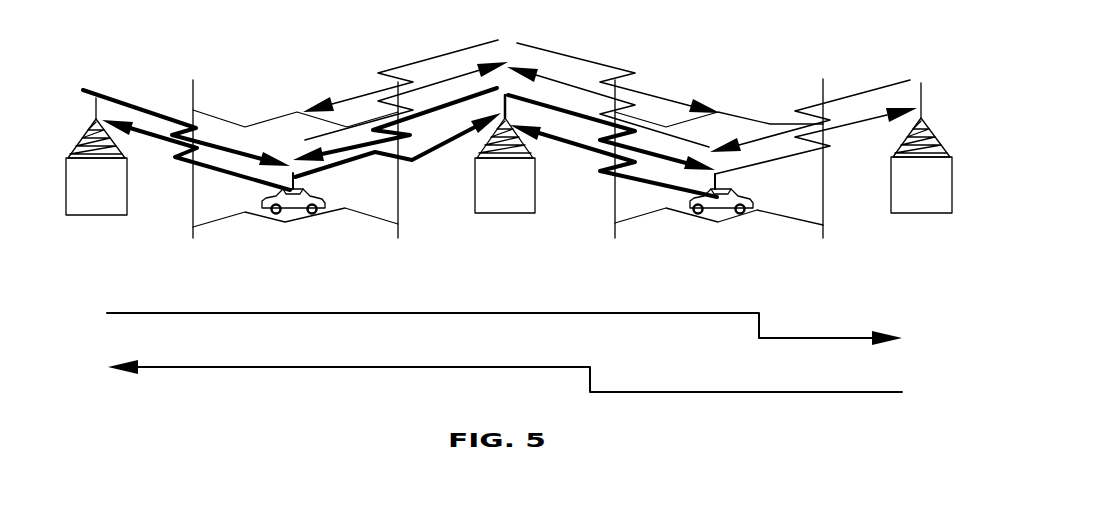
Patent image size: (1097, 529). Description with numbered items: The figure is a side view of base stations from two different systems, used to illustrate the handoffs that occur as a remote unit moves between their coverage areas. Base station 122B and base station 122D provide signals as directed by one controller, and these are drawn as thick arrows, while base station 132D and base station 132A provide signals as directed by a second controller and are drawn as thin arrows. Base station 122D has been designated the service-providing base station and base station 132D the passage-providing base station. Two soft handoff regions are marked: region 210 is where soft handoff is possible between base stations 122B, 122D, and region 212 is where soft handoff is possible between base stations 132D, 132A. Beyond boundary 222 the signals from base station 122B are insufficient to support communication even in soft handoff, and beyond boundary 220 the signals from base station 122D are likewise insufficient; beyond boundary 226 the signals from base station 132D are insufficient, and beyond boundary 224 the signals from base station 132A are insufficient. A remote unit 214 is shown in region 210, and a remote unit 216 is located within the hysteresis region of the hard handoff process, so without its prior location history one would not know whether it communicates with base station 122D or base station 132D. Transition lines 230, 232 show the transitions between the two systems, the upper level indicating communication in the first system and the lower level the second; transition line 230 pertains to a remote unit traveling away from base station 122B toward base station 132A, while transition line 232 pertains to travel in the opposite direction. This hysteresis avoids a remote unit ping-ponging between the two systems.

The base station 122B is at (88, 215).
The base station 122D is at (535, 175).
The base station 132D is at (518, 213).
The base station 132A is at (920, 213).
The boundary 220 is at (192, 92).
The boundary 222 is at (398, 216).
The boundary 224 is at (615, 232).
The boundary 226 is at (822, 90).
The soft handoff region 210 is at (193, 230).
The soft handoff region 212 is at (770, 211).
The mobile unit 214 is at (290, 210).
The remote unit 216 is at (710, 210).
The transition line 230 is at (717, 313).
The transition line 232 is at (792, 391).